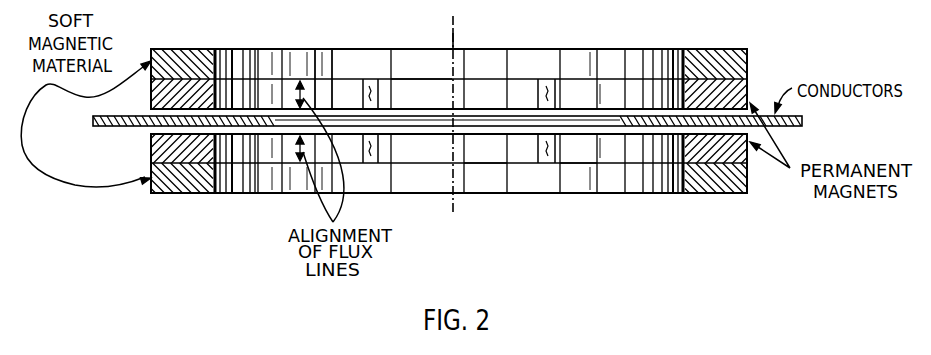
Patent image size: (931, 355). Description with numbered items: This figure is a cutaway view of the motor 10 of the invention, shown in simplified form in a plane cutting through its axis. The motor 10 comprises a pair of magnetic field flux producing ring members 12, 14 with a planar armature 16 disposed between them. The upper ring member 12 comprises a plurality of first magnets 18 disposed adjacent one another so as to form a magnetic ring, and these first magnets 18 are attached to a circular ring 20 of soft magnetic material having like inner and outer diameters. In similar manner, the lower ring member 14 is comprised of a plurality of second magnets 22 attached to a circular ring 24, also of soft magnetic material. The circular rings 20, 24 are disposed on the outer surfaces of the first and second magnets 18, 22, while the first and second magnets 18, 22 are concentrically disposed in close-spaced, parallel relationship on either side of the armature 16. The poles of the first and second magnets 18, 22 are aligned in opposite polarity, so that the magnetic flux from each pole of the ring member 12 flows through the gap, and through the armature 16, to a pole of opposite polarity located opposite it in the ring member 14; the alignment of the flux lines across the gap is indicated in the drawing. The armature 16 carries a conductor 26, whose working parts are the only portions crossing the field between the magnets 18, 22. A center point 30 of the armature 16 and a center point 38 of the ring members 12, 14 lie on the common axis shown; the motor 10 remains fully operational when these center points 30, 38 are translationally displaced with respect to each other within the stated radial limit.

The motor 10 is at (738, 35).
The ring member 12 is at (760, 64).
The ring member 14 is at (739, 208).
The planar armature 16 is at (82, 121).
The first magnets 18 is at (410, 93).
The circular ring 20 is at (336, 72).
The second magnets 22 is at (486, 146).
The circular ring 24 is at (576, 176).
The conductor 26 is at (802, 123).
The center point 30 is at (452, 39).
The center point 38 is at (454, 30).